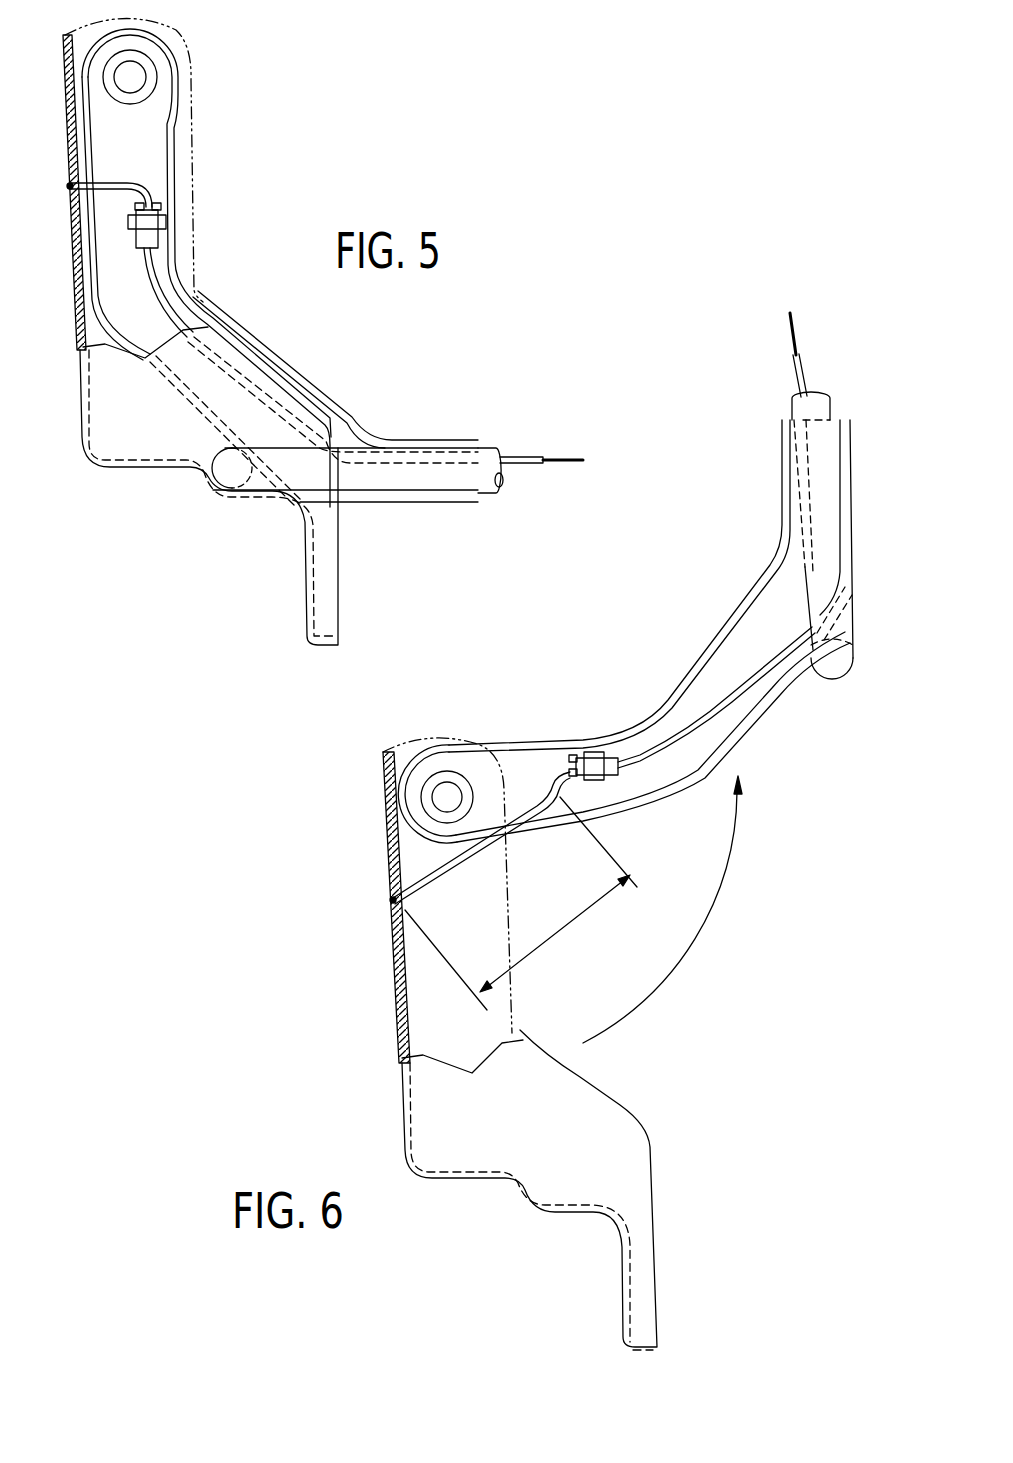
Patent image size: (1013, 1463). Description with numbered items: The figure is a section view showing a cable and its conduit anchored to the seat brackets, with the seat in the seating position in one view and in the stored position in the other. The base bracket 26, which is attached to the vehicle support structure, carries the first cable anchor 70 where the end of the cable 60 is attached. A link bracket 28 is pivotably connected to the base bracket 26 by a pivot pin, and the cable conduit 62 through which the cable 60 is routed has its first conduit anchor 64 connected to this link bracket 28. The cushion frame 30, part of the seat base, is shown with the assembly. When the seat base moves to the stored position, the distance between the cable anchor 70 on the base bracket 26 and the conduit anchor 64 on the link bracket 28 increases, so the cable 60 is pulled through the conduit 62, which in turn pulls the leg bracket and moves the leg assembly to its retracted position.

In FIG. 5, the base bracket 26 is at (147, 470).
In FIG. 6, the base bracket 26 is at (400, 1010).
In FIG. 5, the link bracket 28 is at (172, 128).
In FIG. 6, the link bracket 28 is at (778, 693).
In FIG. 5, the cushion frame 30 is at (488, 487).
In FIG. 6, the cushion frame 30 is at (847, 632).
In FIG. 5, the cable 60 is at (565, 458).
In FIG. 6, the cable 60 is at (796, 338).
In FIG. 5, the cable conduit 62 is at (515, 457).
In FIG. 6, the cable conduit 62 is at (803, 370).
In FIG. 5, the first conduit anchor 64 is at (165, 198).
In FIG. 6, the first conduit anchor 64 is at (590, 752).
In FIG. 5, the first cable anchor 70 is at (66, 187).
In FIG. 6, the first cable anchor 70 is at (390, 900).